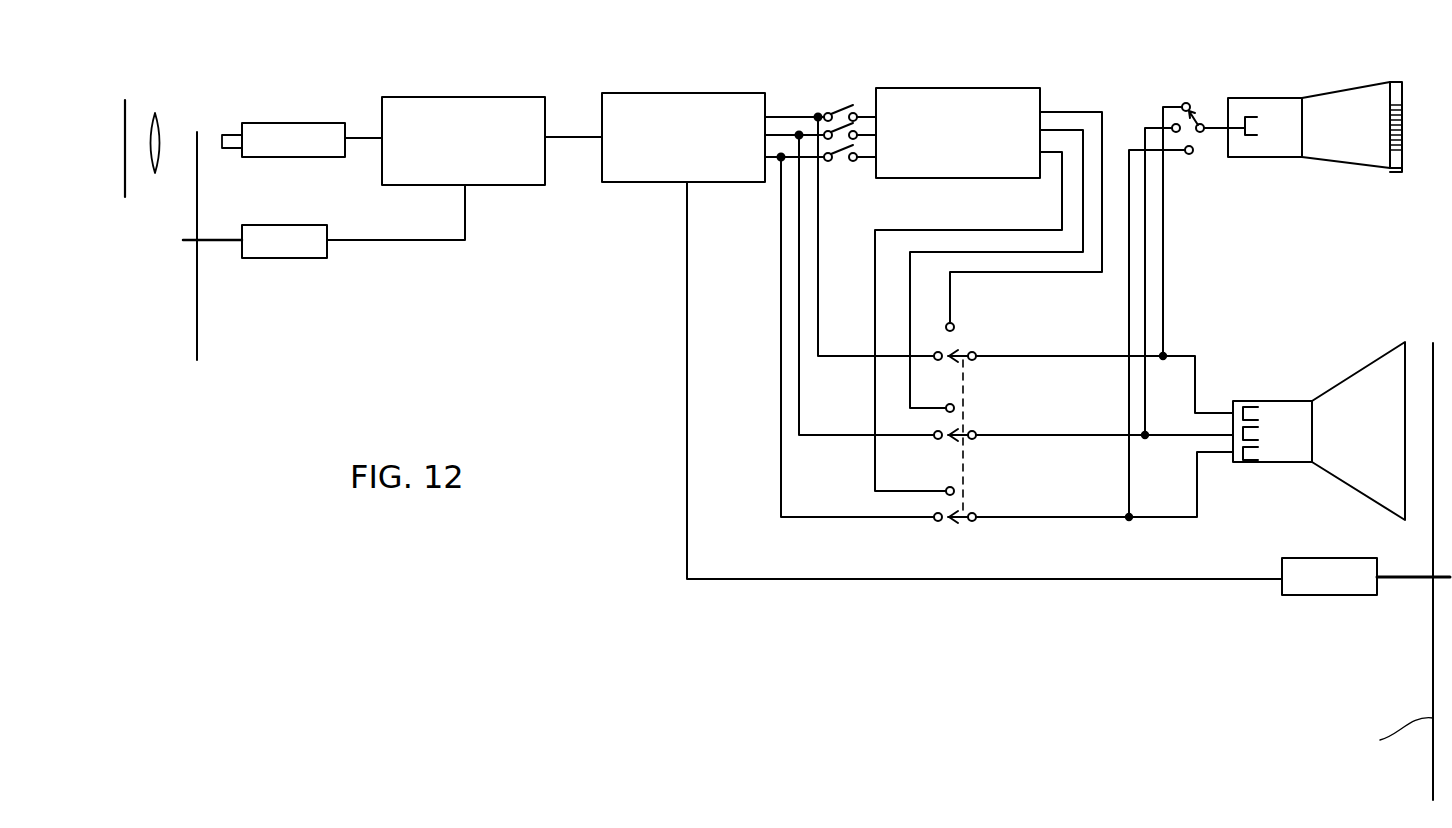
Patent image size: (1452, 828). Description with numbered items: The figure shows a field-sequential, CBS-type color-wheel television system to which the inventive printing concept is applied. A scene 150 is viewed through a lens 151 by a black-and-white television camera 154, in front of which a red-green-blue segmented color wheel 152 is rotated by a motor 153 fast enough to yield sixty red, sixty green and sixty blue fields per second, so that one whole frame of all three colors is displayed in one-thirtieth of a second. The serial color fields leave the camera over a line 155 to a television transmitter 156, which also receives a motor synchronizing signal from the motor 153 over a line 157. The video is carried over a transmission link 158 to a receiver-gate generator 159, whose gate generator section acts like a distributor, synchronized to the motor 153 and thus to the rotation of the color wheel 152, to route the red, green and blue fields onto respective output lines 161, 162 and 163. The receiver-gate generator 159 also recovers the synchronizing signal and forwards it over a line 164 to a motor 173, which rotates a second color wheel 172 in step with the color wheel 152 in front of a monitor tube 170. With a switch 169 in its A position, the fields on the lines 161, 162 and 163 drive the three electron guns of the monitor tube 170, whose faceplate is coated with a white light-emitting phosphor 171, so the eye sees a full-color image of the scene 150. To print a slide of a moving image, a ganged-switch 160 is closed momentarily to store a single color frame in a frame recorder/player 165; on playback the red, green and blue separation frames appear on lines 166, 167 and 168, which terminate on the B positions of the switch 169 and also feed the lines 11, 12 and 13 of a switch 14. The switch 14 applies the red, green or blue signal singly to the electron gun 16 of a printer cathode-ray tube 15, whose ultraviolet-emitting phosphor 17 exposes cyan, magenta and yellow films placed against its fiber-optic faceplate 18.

The line 11 is at (1165, 268).
The line 12 is at (1147, 300).
The line 13 is at (1129, 340).
The switch 14 is at (1197, 118).
The cathode-ray tube 15 is at (1302, 97).
The electron gun 16 is at (1245, 116).
The ultraviolet-emitting phosphor 17 is at (1385, 128).
The fiber-optic faceplate 18 is at (1402, 130).
The scene 150 is at (127, 99).
The lens 151 is at (157, 111).
The color wheel 152 is at (199, 302).
The motor 153 is at (290, 225).
The black-and-white television camera 154 is at (292, 122).
The camera output line 155 is at (364, 137).
The television transmitter 156 is at (440, 96).
The line 157 is at (400, 241).
The transmission link 158 is at (575, 136).
The receiver-gate generator 159 is at (720, 92).
The ganged-switch 160 is at (840, 107).
The output line 161 is at (818, 228).
The output line 162 is at (799, 258).
The output line 163 is at (781, 292).
The motor drive line 164 is at (687, 318).
The frame recorder/player 165 is at (962, 88).
The line 166 is at (1088, 112).
The line 167 is at (1058, 190).
The line 168 is at (1065, 225).
The switch 169 is at (963, 352).
The monitor tube 170 is at (1302, 400).
The white light-emitting phosphor 171 is at (1400, 410).
The color wheel 172 is at (1433, 637).
The motor 173 is at (1312, 597).